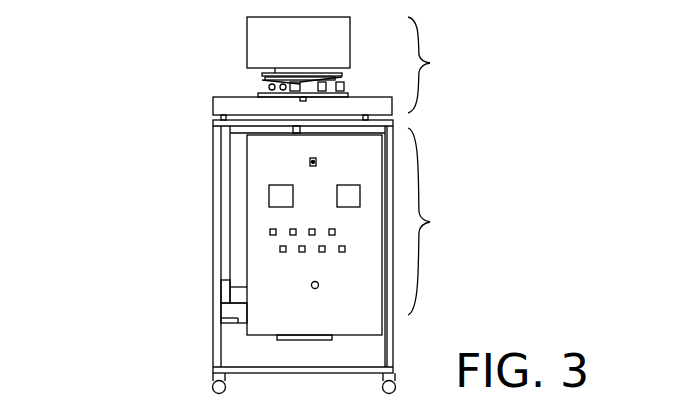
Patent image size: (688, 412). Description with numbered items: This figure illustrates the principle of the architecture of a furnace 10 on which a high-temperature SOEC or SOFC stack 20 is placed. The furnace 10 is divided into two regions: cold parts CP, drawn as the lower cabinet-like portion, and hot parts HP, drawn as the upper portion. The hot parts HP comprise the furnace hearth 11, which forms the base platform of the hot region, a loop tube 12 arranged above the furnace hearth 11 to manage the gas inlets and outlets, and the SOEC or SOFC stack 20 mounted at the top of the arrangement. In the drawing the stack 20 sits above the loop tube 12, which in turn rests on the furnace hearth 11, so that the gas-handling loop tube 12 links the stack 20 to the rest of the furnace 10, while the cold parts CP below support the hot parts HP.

The furnace 10 is at (128, 95).
The furnace hearth 11 is at (218, 106).
The loop tube 12 is at (262, 75).
The SOEC or SOFC stack 20 is at (258, 38).
The hot parts HP is at (436, 65).
The cold parts CP is at (436, 221).